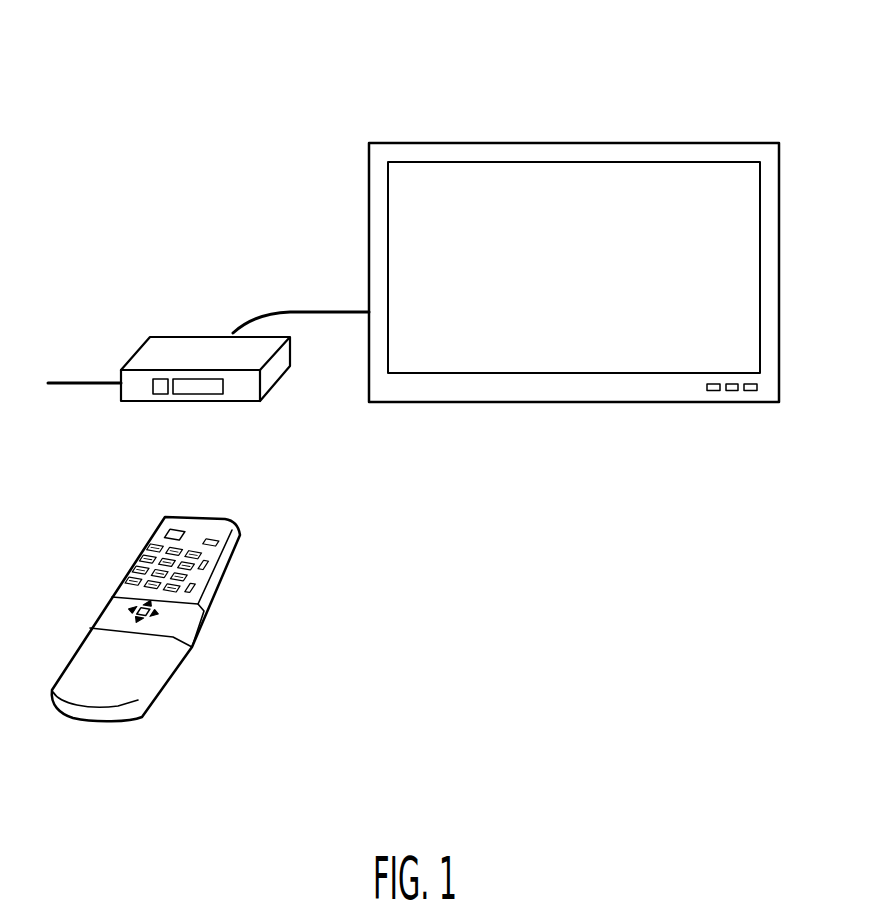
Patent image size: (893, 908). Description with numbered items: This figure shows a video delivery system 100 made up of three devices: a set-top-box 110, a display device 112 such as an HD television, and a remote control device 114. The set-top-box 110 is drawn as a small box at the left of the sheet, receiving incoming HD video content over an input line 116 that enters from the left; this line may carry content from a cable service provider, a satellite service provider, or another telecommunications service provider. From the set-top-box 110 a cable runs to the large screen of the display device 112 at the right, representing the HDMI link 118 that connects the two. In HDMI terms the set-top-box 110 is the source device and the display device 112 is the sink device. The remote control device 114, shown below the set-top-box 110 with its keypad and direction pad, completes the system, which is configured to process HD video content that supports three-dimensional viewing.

The video delivery system 100 is at (316, 38).
The set-top-box 110 is at (267, 394).
The display device 112 is at (583, 144).
The remote control device 114 is at (160, 672).
The input line 116 is at (82, 382).
The HDMI link 118 is at (280, 311).